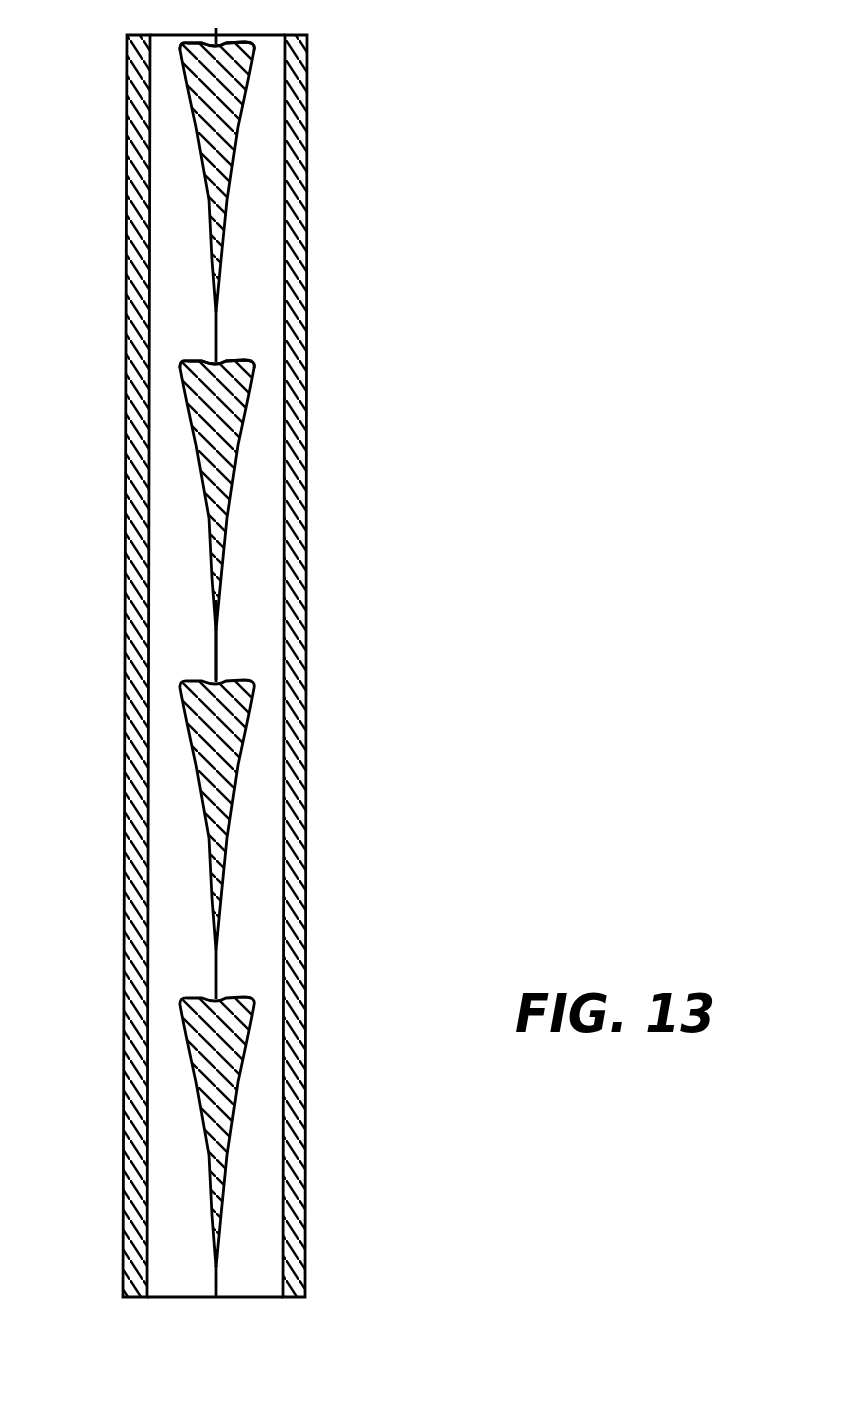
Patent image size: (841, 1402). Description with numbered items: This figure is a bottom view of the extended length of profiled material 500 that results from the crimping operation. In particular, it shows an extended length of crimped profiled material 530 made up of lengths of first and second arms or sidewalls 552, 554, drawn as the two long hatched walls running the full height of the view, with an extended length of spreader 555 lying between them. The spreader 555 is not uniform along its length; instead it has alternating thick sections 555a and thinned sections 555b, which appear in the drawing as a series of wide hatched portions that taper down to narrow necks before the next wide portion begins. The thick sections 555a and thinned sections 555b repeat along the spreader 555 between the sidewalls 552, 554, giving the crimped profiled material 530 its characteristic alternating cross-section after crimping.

The extended length of profiled material 500 is at (498, 258).
The extended length of crimped profiled material 530 is at (475, 408).
The first arm or sidewall 552 is at (125, 461).
The second arm or sidewall 554 is at (305, 667).
The extended length of spreader 555 is at (209, 538).
The thick sections 555a is at (253, 364).
The thinned sections 555b is at (216, 645).